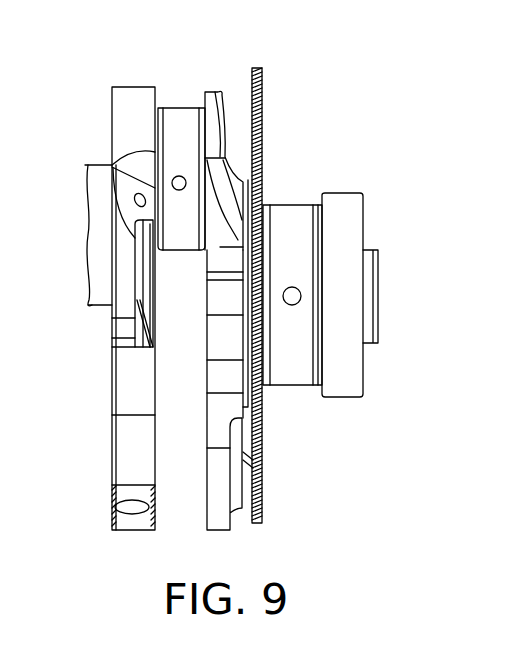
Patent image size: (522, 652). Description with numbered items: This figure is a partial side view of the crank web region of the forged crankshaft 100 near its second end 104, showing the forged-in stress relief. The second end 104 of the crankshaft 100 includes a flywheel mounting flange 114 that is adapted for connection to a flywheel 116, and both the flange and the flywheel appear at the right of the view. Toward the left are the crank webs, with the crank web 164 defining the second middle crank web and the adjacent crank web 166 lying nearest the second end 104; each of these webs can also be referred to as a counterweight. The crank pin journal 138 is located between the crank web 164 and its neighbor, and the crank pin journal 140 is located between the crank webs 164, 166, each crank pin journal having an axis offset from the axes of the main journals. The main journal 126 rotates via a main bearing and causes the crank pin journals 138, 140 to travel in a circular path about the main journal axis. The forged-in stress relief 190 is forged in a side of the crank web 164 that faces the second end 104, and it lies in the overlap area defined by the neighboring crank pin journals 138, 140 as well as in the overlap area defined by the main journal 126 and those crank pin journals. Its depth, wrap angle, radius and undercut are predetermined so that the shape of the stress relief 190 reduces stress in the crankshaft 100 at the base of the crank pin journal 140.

The forged crankshaft 100 is at (349, 103).
The second end 104 is at (342, 407).
The flywheel mounting flange 114 is at (356, 381).
The flywheel 116 is at (263, 97).
The main journal 126 is at (290, 215).
The crank pin journal 138 is at (88, 236).
The crank pin journal 140 is at (180, 115).
The crank web 164 is at (131, 98).
The crank web 166 is at (222, 91).
The forged-in stress relief 190 is at (157, 296).